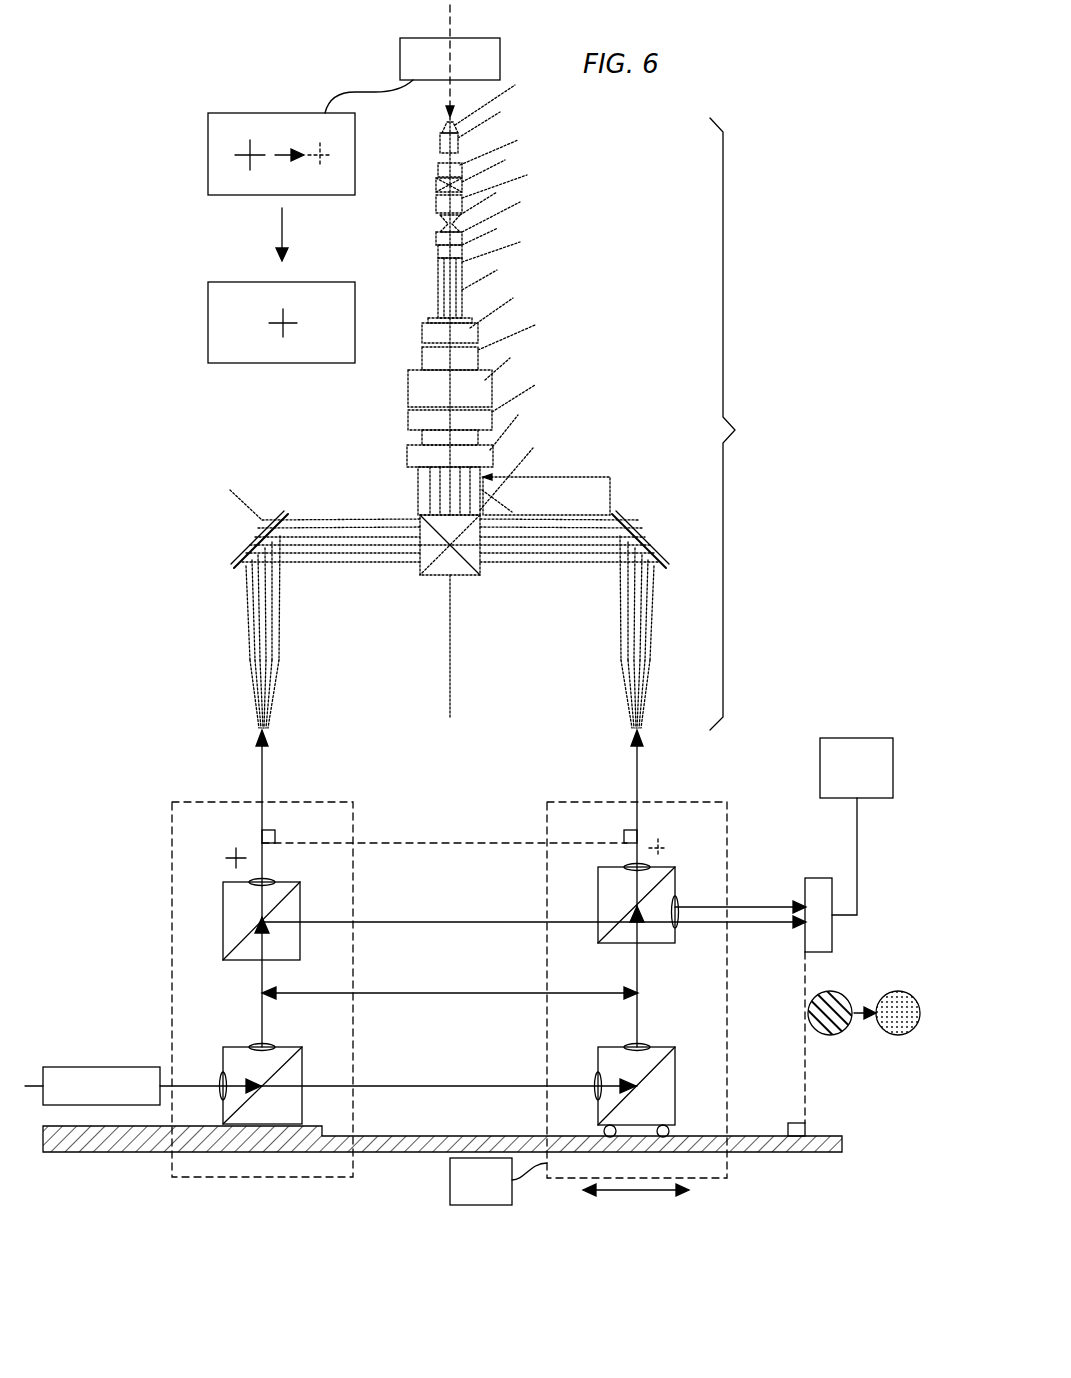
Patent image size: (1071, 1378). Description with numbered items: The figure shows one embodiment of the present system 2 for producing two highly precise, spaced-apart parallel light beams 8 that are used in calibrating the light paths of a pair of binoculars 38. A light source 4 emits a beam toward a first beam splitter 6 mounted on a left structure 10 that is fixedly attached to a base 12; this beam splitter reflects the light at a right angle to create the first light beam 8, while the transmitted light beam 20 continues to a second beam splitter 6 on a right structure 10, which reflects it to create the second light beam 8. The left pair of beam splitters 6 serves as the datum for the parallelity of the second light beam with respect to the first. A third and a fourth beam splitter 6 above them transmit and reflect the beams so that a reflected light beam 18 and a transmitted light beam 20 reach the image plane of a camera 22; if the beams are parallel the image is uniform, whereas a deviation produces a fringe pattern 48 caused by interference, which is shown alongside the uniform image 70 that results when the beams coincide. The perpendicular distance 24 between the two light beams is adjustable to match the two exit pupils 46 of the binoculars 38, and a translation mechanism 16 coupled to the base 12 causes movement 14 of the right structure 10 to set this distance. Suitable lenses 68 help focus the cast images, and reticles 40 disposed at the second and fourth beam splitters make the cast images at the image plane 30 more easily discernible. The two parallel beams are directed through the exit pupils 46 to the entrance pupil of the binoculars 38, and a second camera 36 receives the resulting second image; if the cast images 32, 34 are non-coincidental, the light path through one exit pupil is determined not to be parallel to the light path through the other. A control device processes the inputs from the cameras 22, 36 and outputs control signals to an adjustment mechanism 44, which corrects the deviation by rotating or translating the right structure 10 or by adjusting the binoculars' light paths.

The system 2 is at (652, 985).
The light source 4 is at (112, 1067).
The beam splitter 6 is at (250, 917).
The light beam 8 is at (255, 765).
The structure 10 is at (310, 802).
The base 12 is at (820, 1136).
The movement 14 is at (640, 1195).
The translation mechanism 16 is at (598, 1125).
The light beam 18 is at (460, 920).
The transmitted light beam 20 is at (465, 1085).
The camera 22 is at (822, 878).
The distance 24 is at (450, 975).
The image plane 30 is at (290, 113).
The cast image 32 is at (250, 155).
The cast image 34 is at (333, 152).
The second camera 36 is at (492, 75).
The pair of binoculars 38 is at (777, 445).
The reticle 40 is at (265, 880).
The adjustment mechanism 44 is at (495, 1195).
The exit pupil 46 is at (250, 732).
The fringe pattern 48 is at (872, 782).
The lens 68 is at (222, 1078).
The aperture 70 is at (877, 1055).